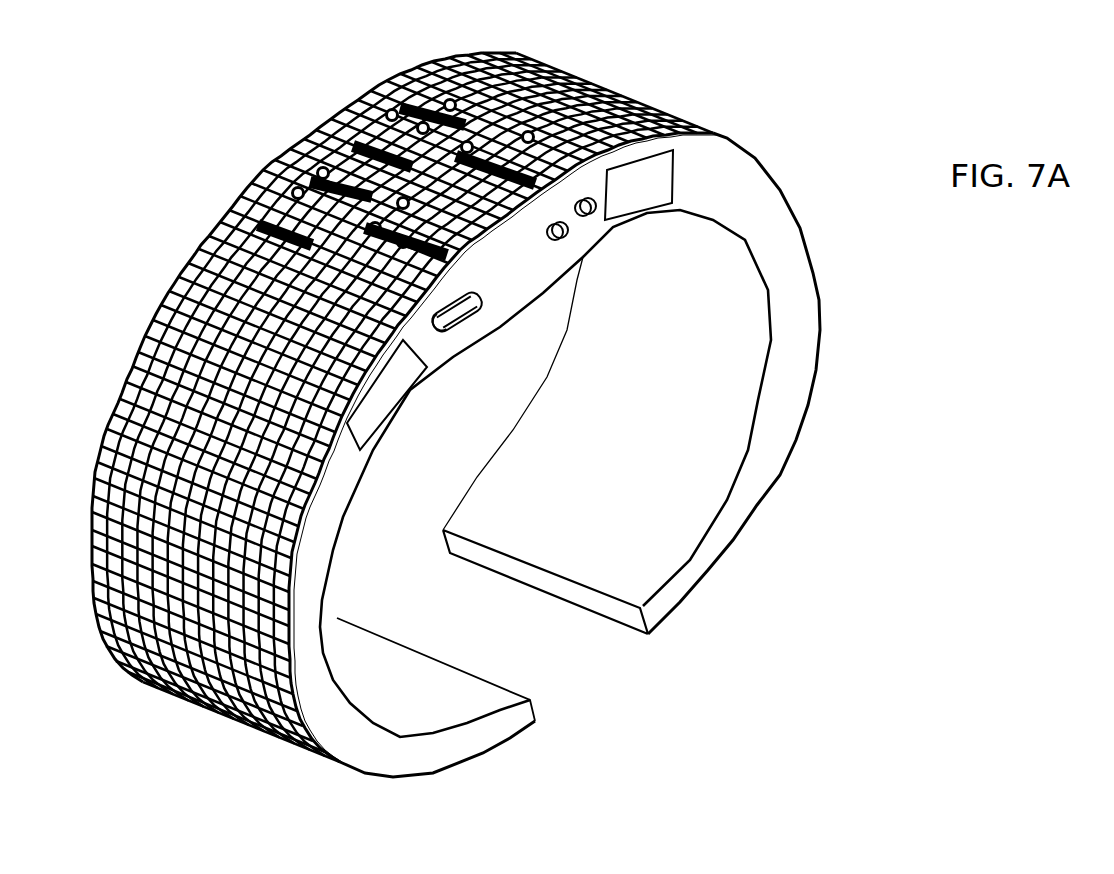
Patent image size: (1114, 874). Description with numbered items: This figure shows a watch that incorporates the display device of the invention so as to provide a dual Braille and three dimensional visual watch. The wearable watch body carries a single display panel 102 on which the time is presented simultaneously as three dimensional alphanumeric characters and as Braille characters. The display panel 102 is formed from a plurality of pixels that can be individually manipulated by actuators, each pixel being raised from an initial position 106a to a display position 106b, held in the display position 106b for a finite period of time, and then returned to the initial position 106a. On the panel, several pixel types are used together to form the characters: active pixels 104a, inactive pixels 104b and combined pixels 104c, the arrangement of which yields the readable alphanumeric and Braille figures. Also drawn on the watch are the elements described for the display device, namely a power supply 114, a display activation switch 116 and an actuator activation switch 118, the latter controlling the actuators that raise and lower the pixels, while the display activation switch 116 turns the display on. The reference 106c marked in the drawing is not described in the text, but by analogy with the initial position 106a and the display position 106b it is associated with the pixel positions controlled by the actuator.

The display panel 102 is at (312, 152).
The active pixels 104a is at (262, 205).
The inactive pixels 104b is at (348, 148).
The combined pixels 104c is at (390, 120).
The initial position 106a is at (351, 208).
The display position 106b is at (408, 159).
The electrical contact 106c is at (489, 126).
The power supply 114 is at (382, 390).
The display activation switch 116 is at (585, 222).
The actuator activation switch 118 is at (456, 312).